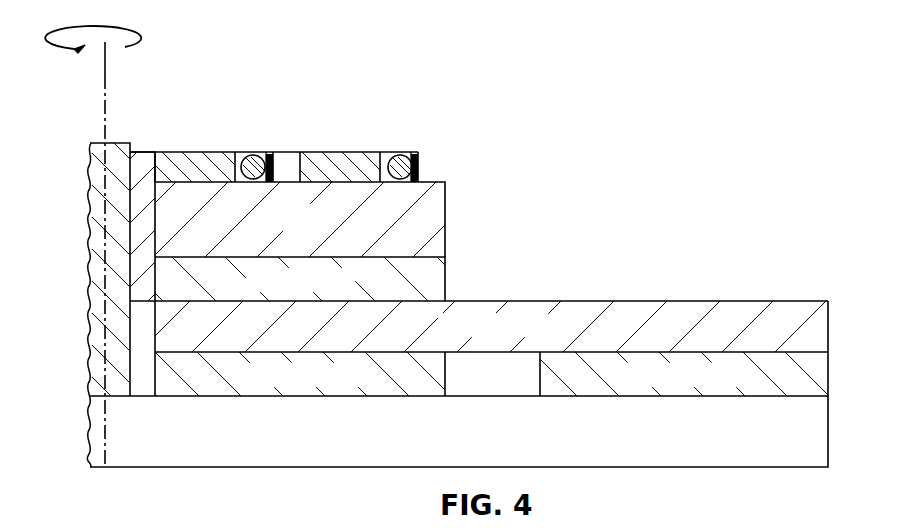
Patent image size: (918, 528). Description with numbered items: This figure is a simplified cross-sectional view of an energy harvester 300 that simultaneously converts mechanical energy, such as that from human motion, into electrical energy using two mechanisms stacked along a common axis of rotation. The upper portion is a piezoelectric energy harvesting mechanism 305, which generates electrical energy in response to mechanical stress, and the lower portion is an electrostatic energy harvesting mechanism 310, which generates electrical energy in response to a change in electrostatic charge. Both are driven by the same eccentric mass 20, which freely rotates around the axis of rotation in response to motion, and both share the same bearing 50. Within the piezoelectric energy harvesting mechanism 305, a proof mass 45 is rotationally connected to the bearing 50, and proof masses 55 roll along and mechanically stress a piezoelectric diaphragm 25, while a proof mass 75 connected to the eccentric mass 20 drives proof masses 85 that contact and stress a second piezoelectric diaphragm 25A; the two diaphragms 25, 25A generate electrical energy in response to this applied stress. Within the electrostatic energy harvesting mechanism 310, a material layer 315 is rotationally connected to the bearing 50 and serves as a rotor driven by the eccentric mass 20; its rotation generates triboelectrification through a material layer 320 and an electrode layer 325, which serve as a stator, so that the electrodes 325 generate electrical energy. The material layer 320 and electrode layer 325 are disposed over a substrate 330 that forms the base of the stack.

The eccentric mass 20 is at (314, 233).
The piezoelectric diaphragm 25 is at (270, 156).
The piezoelectric diaphragm 25A is at (415, 157).
The proof mass 45 is at (193, 157).
The bearing 50 is at (142, 157).
The proof masses 55 is at (258, 158).
The proof mass 75 is at (340, 158).
The proof masses 85 is at (403, 158).
The energy harvester 300 is at (425, 243).
The piezoelectric energy harvesting mechanism 305 is at (322, 172).
The electrostatic energy harvesting mechanism 310 is at (72, 183).
The material layer 315 is at (437, 277).
The material layer 320 is at (690, 308).
The electrode layer 325 is at (760, 392).
The substrate 330 is at (486, 445).